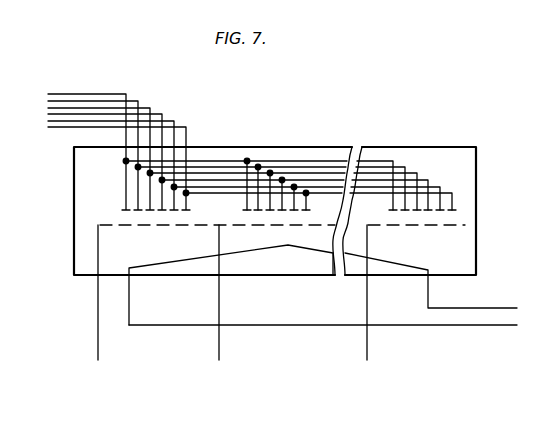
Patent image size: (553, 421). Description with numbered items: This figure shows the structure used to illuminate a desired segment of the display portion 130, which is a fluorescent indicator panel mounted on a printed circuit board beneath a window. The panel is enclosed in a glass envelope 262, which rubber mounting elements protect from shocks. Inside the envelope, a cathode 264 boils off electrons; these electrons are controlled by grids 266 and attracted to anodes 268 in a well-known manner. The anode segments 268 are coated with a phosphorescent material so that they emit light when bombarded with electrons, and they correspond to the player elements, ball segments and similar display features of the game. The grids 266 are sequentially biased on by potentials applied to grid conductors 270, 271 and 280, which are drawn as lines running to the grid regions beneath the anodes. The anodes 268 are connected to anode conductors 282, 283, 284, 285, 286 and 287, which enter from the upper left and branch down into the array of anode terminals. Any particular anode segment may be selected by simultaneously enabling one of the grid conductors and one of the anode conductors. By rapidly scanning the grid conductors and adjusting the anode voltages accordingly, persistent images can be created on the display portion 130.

The display portion 130 is at (441, 128).
The glass envelope 262 is at (478, 177).
The cathode 264 is at (397, 262).
The grids 266 is at (168, 226).
The anodes 268 is at (124, 208).
The grid conductor 270 is at (98, 342).
The grid conductor 271 is at (219, 342).
The grid conductor 280 is at (367, 345).
The anode conductor 282 is at (108, 94).
The anode conductor 283 is at (141, 101).
The anode conductor 284 is at (153, 107).
The anode conductor 285 is at (165, 114).
The anode conductor 286 is at (177, 121).
The anode conductor 287 is at (190, 128).